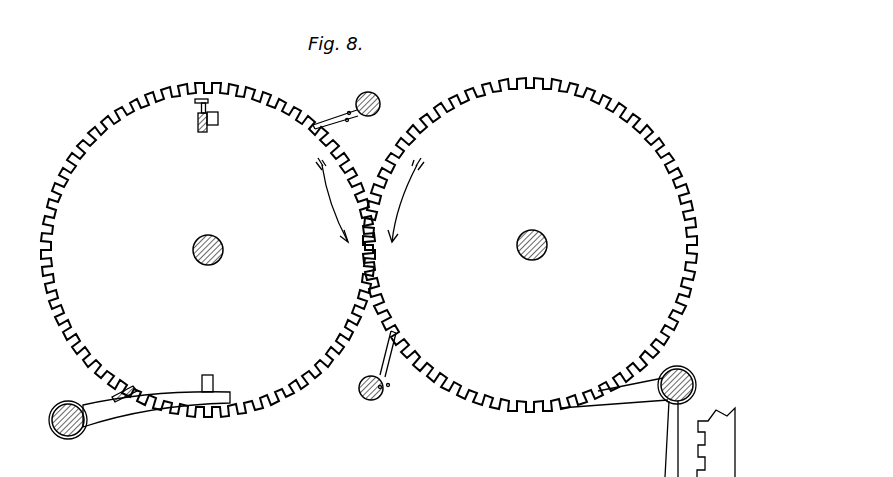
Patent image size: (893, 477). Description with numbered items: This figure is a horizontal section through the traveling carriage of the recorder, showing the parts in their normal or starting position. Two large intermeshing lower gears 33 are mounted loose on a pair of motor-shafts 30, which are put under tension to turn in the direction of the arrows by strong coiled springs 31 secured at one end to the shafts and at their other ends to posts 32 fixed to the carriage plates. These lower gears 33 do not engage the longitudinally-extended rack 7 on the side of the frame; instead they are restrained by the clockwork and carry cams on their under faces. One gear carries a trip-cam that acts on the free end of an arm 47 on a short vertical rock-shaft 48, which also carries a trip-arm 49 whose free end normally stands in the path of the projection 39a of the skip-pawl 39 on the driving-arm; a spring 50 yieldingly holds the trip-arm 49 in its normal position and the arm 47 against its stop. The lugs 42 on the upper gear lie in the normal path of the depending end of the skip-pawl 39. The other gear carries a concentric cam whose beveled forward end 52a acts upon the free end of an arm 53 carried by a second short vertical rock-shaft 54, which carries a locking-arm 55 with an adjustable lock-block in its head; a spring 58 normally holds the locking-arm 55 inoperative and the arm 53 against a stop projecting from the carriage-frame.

The rack 7 is at (735, 472).
The motor-shaft 30 is at (199, 238).
The coiled spring 31 is at (332, 128).
The post 32 is at (380, 110).
The lower gear 33 is at (369, 247).
The skip-pawl 39 is at (198, 126).
The projection of the skip-pawl 39a is at (204, 98).
The lug 42 is at (218, 121).
The arm 47 is at (92, 402).
The rock-shaft 48 is at (68, 428).
The trip-arm 49 is at (157, 405).
The spring 50 is at (60, 434).
The beveled end of the cam 52a is at (517, 476).
The arm 53 is at (612, 402).
The rock-shaft 54 is at (683, 372).
The locking-arm 55 is at (668, 443).
The spring 58 is at (696, 385).